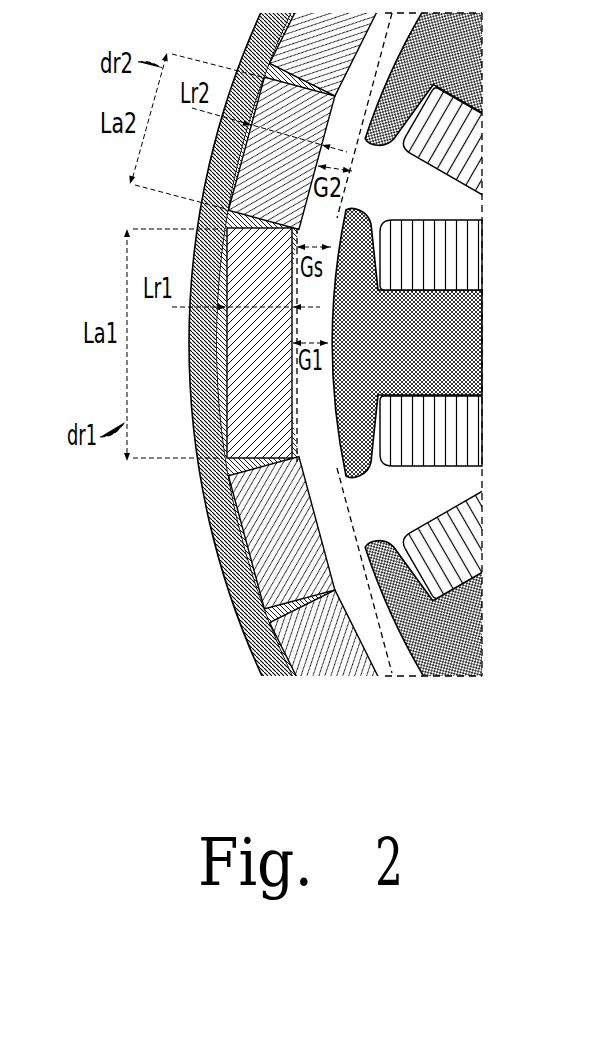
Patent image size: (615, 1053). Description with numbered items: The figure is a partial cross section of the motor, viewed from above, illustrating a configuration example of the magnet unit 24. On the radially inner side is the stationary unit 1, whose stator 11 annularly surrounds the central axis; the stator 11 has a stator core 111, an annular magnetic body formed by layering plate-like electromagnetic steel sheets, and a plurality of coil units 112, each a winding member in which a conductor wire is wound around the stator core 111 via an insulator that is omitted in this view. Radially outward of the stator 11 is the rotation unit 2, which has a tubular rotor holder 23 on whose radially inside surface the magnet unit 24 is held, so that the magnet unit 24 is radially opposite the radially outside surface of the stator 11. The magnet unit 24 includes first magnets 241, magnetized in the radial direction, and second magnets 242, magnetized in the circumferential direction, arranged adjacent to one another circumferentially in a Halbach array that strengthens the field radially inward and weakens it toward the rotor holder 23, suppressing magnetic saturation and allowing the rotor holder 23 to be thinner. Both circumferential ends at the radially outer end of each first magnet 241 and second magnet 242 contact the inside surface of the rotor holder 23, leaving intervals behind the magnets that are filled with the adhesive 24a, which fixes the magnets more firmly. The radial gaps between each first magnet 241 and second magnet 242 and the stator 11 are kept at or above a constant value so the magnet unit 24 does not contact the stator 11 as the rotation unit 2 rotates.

The stationary unit 1 is at (470, 45).
The rotation unit 2 is at (243, 46).
The stator 11 is at (467, 343).
The stator core 111 is at (474, 333).
The coil unit 112 is at (564, 360).
The rotor holder 23 is at (229, 559).
The magnet unit 24 is at (34, 173).
The first magnet 241 is at (230, 240).
The second magnet 242 is at (226, 198).
The adhesive 24a is at (220, 366).